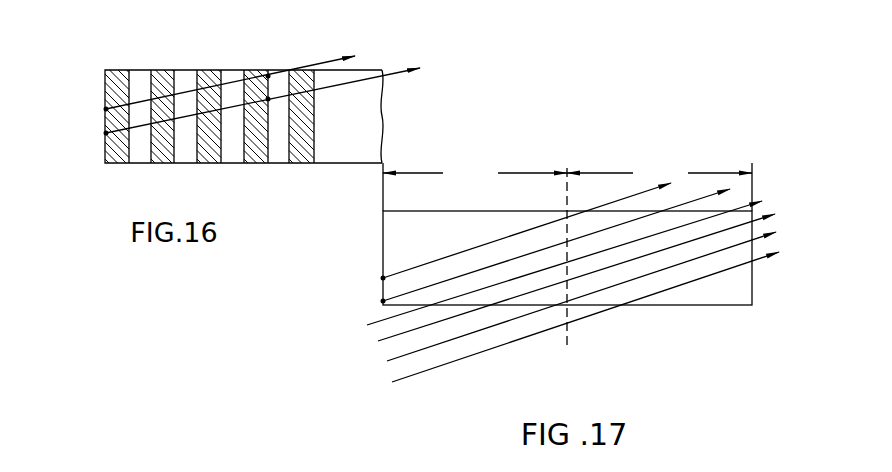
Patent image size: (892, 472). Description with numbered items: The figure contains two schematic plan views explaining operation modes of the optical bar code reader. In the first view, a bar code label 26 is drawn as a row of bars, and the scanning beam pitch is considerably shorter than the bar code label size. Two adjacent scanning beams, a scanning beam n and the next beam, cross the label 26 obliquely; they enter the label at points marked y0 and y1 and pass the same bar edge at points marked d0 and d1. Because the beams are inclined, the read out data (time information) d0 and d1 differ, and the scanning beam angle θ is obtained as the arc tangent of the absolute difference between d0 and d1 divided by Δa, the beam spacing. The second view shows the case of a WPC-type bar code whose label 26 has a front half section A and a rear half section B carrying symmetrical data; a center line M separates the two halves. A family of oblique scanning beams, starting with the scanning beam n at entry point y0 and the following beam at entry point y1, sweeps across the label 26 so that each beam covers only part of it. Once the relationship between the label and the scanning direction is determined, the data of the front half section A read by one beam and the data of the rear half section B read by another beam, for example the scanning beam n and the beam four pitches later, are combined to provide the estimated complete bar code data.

In FIG. 16, the grating / striped element 26 is at (188, 69).
In FIG. 17, the grating / striped element 26 is at (392, 233).
In FIG. 16, the scanning beam n is at (104, 110).
In FIG. 17, the scanning beam n is at (381, 279).
In FIG. 16, the entry point y0 is at (106, 109).
In FIG. 17, the entry point y0 is at (383, 278).
In FIG. 16, the entry point y1 is at (106, 134).
In FIG. 17, the entry point y1 is at (383, 301).
In FIG. 16, the read out datum d0 is at (268, 76).
In FIG. 16, the read out datum d1 is at (268, 99).
In FIG. 17, the front half section A is at (475, 173).
In FIG. 17, the rear half section B is at (659, 173).
In FIG. 17, the midline M is at (567, 268).